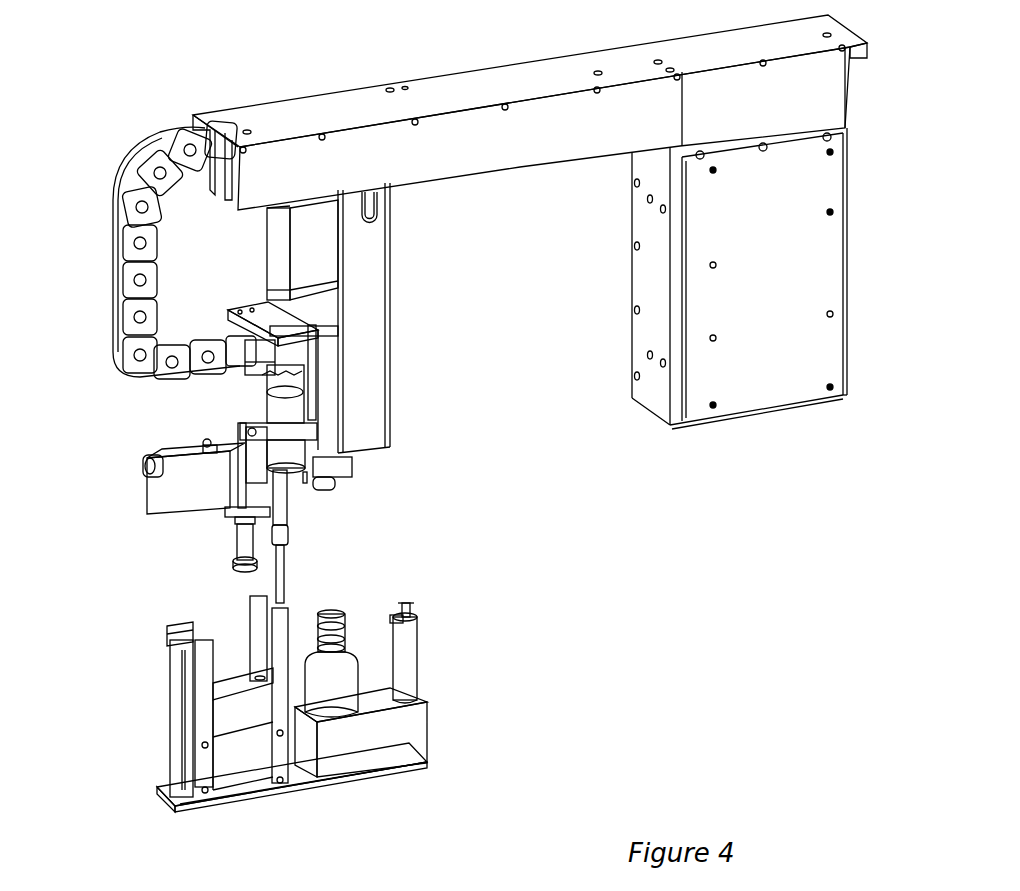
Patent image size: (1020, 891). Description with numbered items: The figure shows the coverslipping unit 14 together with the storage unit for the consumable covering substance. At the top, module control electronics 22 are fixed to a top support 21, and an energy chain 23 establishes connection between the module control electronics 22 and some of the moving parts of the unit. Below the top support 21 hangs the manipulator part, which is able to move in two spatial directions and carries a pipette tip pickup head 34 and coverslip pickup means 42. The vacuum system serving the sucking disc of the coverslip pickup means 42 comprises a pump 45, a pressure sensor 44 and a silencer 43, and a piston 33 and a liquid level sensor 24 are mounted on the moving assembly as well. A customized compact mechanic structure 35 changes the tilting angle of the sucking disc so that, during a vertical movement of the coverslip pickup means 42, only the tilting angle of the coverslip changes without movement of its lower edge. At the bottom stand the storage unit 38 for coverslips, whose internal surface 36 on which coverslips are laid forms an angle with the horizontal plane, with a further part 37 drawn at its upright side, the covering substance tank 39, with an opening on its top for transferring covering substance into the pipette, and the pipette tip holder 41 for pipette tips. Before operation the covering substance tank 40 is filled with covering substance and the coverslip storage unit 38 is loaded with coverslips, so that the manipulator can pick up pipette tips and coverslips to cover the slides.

The coverslipping unit 14 is at (378, 72).
The top support 21 is at (545, 135).
The module control electronics 22 is at (820, 272).
The energy chain 23 is at (115, 183).
The liquid level sensor 24 is at (197, 477).
The piston 33 is at (335, 470).
The pipette tip pickup head 34 is at (275, 487).
The compact mechanic structure 35 is at (222, 520).
The surface on which coverslips are laid 36 is at (240, 683).
The upright clamp 37 is at (165, 635).
The storage unit for coverslips 38 is at (172, 780).
The covering substance tank 39 is at (430, 748).
The covering substance tank 40 is at (327, 628).
The pipette tip holder 41 is at (418, 608).
The coverslip pickup means 42 is at (247, 538).
The silencer 43 is at (290, 453).
The pressure sensor 44 is at (247, 423).
The pump 45 is at (253, 357).